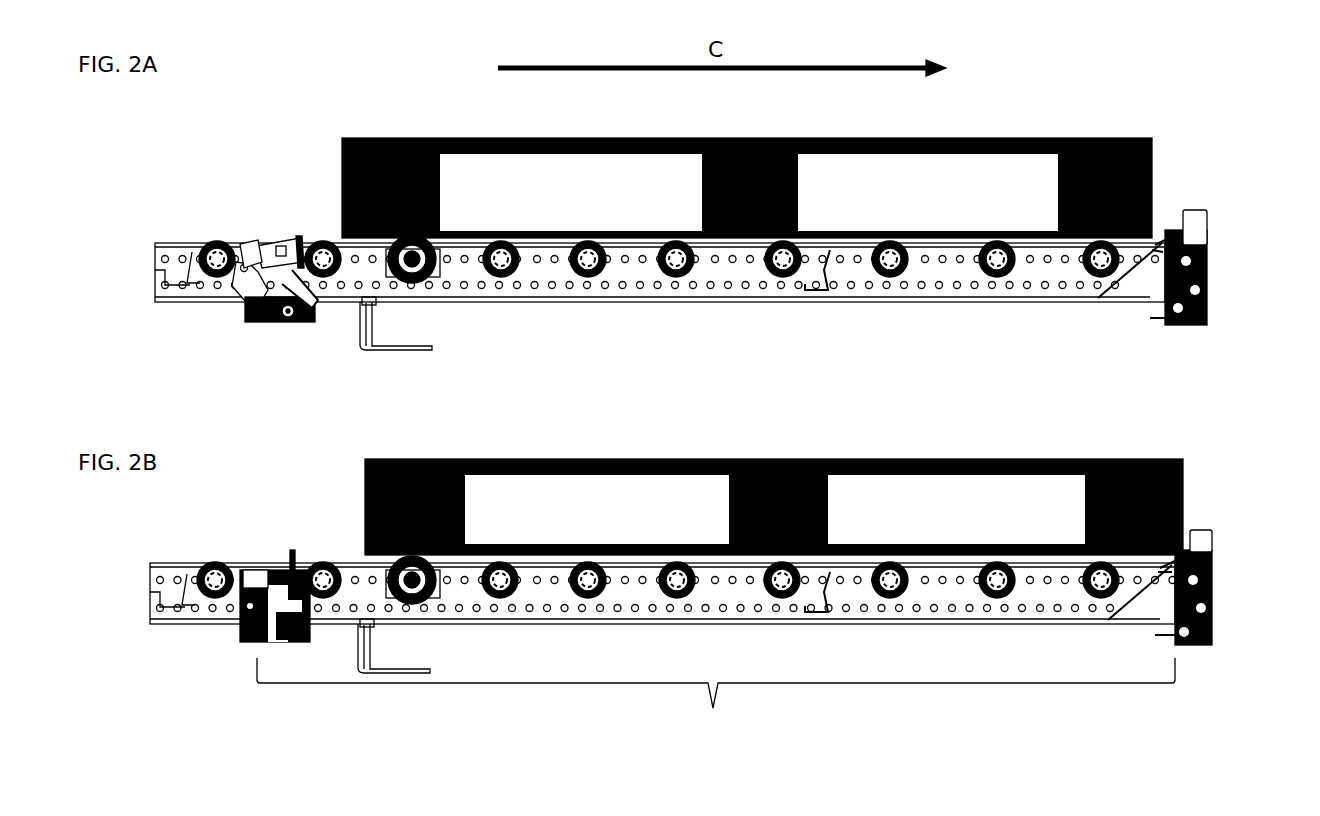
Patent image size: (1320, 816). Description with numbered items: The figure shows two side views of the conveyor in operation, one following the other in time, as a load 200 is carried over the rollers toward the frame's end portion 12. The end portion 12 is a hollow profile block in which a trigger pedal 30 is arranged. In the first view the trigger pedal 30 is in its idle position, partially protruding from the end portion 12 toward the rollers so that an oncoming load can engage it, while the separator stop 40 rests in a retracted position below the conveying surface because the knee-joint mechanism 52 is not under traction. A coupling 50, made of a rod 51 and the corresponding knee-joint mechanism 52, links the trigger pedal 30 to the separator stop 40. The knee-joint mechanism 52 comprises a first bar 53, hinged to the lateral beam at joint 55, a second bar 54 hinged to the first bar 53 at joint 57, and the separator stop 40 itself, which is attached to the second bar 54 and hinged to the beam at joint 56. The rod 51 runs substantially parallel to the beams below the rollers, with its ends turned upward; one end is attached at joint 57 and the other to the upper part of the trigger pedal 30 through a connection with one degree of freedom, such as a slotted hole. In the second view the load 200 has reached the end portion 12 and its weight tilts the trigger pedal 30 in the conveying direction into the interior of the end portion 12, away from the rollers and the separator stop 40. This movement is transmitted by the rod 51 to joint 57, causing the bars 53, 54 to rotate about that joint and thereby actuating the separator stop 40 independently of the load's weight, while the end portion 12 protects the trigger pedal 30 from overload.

In FIG. 2A, the load 200 is at (725, 133).
In FIG. 2B, the load 200 is at (720, 445).
In FIG. 2A, the end portion 12 is at (1212, 214).
In FIG. 2B, the end portion 12 is at (1215, 528).
In FIG. 2A, the trigger pedal 30 is at (1176, 232).
In FIG. 2B, the trigger pedal 30 is at (1212, 580).
In FIG. 2A, the separator stop 40 is at (298, 240).
In FIG. 2B, the separator stop 40 is at (284, 548).
In FIG. 2B, the coupling 50 is at (716, 692).
In FIG. 2A, the rod 51 is at (565, 303).
In FIG. 2B, the rod 51 is at (592, 630).
In FIG. 2A, the knee-joint mechanism 52 is at (236, 313).
In FIG. 2B, the knee-joint mechanism 52 is at (252, 642).
In FIG. 2A, the first bar 53 is at (268, 322).
In FIG. 2A, the second bar 54 is at (268, 248).
In FIG. 2A, the joint 55 is at (290, 320).
In FIG. 2A, the joint 56 is at (240, 250).
In FIG. 2A, the joint 57 is at (312, 322).